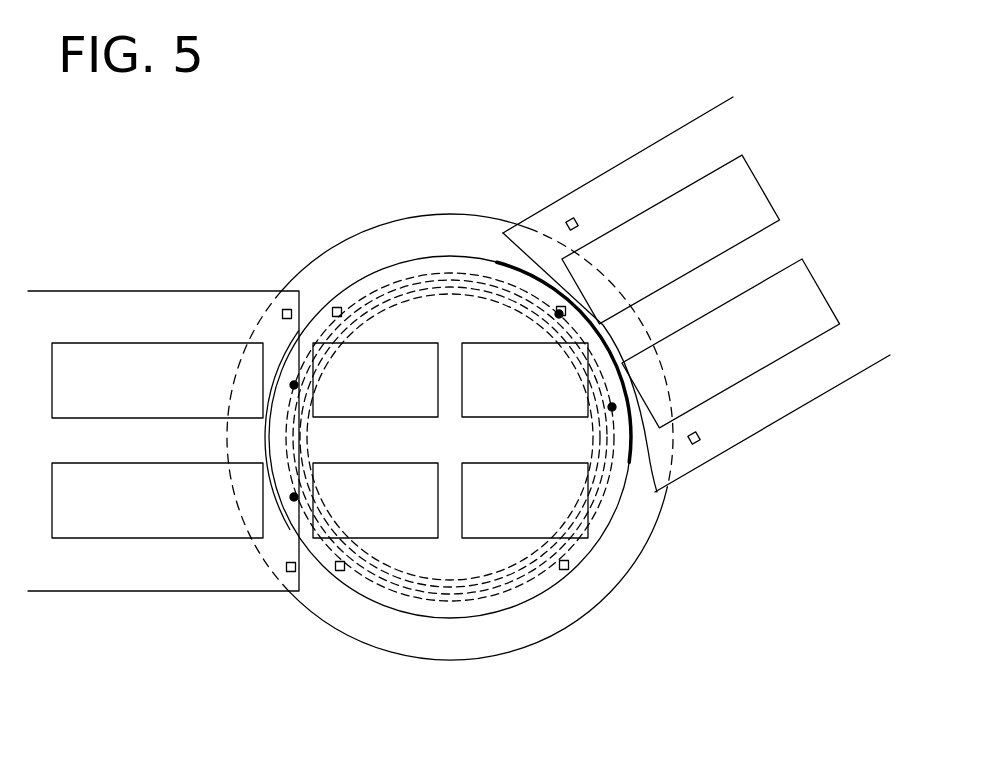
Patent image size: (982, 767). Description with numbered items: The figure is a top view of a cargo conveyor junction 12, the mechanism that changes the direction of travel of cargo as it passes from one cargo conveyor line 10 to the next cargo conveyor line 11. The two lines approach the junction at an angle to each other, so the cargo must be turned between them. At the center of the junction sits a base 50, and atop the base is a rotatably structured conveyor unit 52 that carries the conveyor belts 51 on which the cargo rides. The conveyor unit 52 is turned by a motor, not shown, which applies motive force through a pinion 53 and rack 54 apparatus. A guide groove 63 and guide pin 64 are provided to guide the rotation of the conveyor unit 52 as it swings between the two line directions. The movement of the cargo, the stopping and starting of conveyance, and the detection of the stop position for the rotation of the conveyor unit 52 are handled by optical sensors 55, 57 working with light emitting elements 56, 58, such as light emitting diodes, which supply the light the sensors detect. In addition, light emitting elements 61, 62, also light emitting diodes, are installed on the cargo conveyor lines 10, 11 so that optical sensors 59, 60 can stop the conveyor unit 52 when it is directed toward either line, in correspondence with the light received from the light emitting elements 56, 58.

The cargo conveyor line 10 is at (634, 142).
The cargo conveyor line 11 is at (79, 282).
The cargo conveyor junction 12 is at (408, 208).
The base 50 is at (445, 638).
The conveyor belts 51 is at (512, 398).
The conveyor unit 52 is at (517, 563).
The pinion 53 is at (503, 305).
The rack 54 is at (385, 295).
The optical sensor 55 is at (334, 307).
The light emitting element 56 is at (338, 572).
The optical sensor 57 is at (567, 572).
The light emitting element 58 is at (558, 304).
The optical sensor 59 is at (288, 572).
The optical sensor 60 is at (571, 219).
The light emitting element 61 is at (697, 444).
The light emitting element 62 is at (281, 306).
The guide groove 63 is at (393, 590).
The guide pin 64 is at (294, 385).